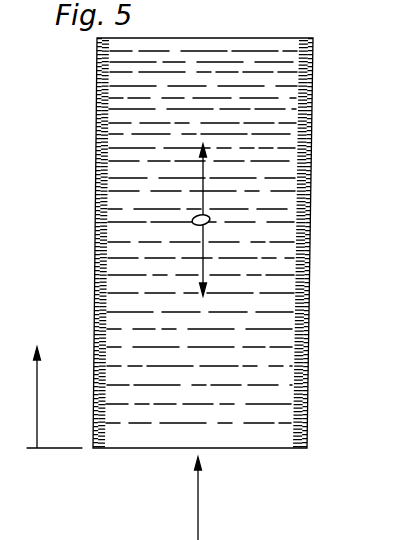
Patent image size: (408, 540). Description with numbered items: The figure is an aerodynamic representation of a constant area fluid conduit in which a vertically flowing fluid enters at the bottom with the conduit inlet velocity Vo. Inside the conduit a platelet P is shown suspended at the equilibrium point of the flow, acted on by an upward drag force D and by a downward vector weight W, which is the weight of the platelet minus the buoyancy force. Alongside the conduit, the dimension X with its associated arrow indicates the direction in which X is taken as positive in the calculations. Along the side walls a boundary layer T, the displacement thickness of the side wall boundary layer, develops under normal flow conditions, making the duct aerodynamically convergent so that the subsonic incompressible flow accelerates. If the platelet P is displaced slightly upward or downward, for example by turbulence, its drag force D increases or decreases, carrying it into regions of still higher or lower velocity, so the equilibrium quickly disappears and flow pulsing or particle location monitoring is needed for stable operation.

The boundary layer T is at (97, 89).
The drag force D is at (206, 170).
The vector weight W is at (202, 271).
The platelet P is at (210, 220).
The dimension X is at (54, 385).
The conduit inlet velocity Vo is at (218, 498).